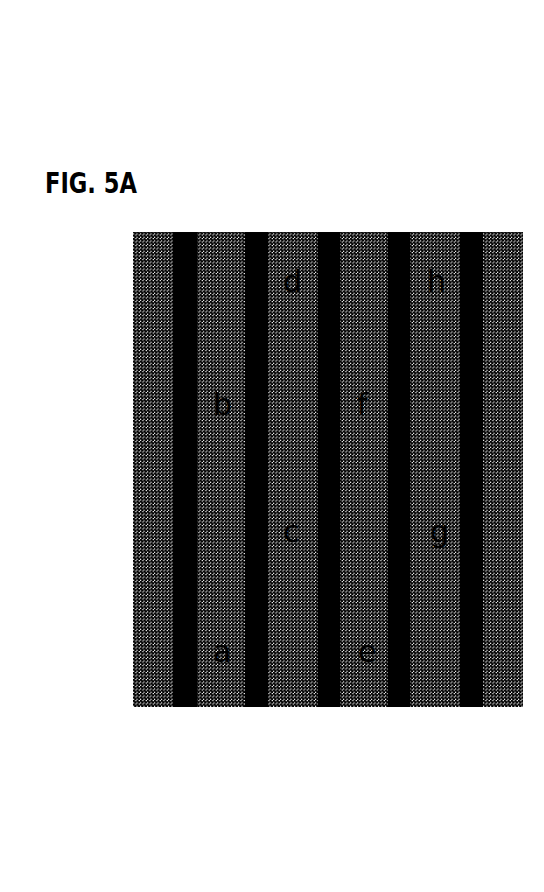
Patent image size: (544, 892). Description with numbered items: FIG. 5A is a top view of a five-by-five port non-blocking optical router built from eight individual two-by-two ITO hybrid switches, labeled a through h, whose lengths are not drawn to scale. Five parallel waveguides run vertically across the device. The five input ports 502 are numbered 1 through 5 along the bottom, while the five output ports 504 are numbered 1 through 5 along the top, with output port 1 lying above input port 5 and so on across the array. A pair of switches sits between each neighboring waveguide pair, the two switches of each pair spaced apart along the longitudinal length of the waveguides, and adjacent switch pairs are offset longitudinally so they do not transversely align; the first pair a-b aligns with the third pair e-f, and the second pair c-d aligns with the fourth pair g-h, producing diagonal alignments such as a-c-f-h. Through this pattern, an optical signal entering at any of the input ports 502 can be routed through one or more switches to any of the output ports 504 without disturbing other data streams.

The input ports 502 is at (328, 787).
The output ports 504 is at (329, 160).
The port number one 1 is at (185, 473).
The port number two 2 is at (256, 473).
The port number three 3 is at (329, 473).
The port number four 4 is at (399, 473).
The port number five 5 is at (471, 473).